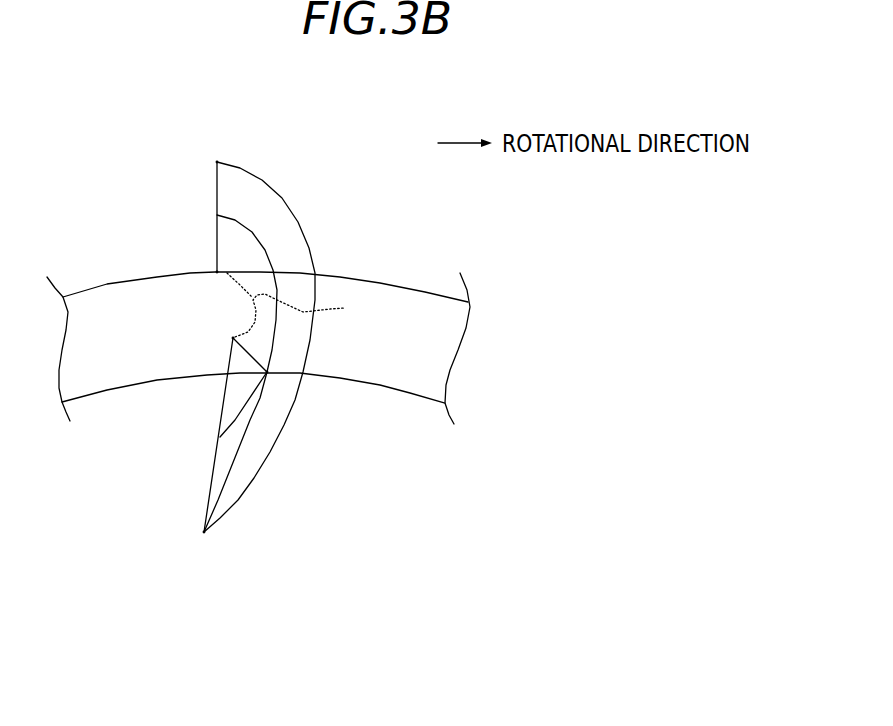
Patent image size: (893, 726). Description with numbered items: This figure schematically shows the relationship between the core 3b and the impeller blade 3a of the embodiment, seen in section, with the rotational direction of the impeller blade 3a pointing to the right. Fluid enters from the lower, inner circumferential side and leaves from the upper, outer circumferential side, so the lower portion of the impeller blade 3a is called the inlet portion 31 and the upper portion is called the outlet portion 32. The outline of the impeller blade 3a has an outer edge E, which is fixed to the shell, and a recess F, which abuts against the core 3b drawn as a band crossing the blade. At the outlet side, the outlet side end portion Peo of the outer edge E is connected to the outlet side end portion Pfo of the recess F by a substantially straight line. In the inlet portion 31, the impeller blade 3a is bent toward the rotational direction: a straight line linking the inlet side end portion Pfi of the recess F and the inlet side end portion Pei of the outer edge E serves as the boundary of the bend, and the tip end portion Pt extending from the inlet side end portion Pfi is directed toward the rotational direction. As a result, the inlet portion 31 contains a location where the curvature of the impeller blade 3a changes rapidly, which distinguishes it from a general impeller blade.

The core 3b is at (278, 348).
The inlet portion 31 is at (270, 435).
The outlet portion 32 is at (256, 238).
The impeller blade 3a is at (282, 206).
The outer edge E is at (298, 347).
The recess F is at (293, 305).
The outlet side end portion of the outer edge Peo is at (226, 122).
The outlet side end portion of the recess Pfo is at (183, 238).
The inlet side end portion of the recess Pfi is at (195, 386).
The tip end portion Pt is at (308, 415).
The inlet side end portion of the outer edge Pei is at (208, 581).